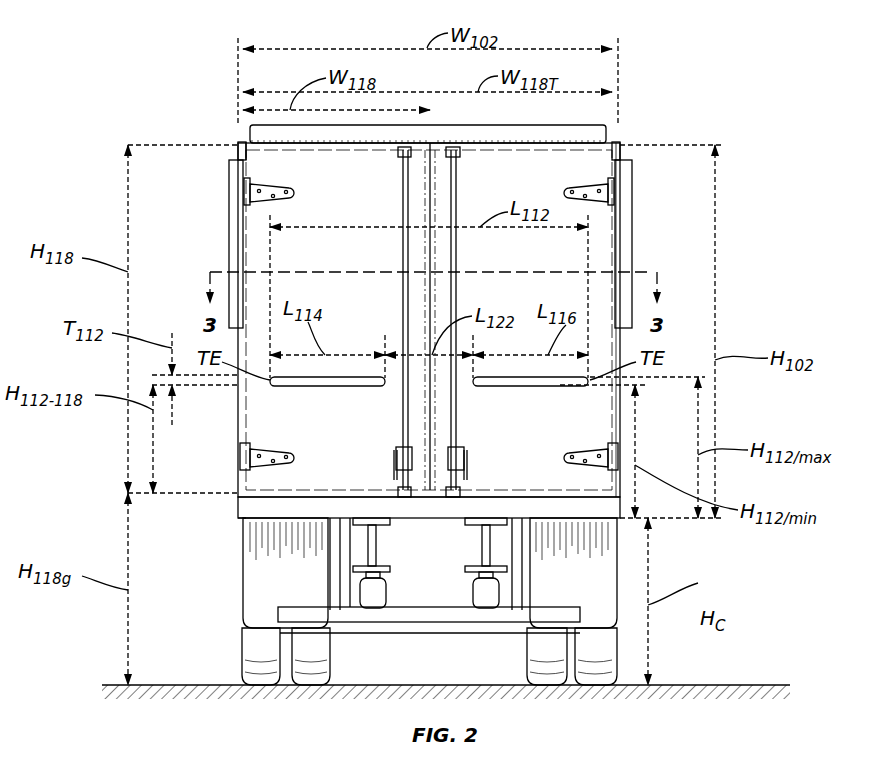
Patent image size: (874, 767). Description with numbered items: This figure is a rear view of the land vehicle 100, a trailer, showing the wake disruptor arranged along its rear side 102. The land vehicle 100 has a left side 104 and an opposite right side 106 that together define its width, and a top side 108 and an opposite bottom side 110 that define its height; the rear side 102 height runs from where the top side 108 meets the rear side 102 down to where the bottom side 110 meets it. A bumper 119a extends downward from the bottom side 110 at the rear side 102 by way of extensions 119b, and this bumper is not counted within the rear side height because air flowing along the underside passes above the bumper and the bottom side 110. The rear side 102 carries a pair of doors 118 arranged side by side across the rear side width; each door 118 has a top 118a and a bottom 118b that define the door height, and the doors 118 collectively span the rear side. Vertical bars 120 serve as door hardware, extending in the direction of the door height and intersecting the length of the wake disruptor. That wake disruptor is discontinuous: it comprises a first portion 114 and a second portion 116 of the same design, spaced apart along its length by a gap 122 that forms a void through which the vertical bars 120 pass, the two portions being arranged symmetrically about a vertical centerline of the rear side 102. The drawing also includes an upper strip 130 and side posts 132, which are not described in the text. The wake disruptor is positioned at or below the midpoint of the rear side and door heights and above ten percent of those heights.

The land vehicle 100 is at (674, 56).
The rear side 102 is at (598, 512).
The left side 104 is at (237, 152).
The right side 106 is at (620, 152).
The top side 108 is at (622, 140).
The bottom side 110 is at (418, 530).
The first portion 114 is at (310, 387).
The second portion 116 is at (552, 388).
The doors 118 is at (242, 455).
The top of door 118a is at (240, 140).
The bottom of door 118b is at (252, 505).
The bumper 119a is at (335, 565).
The extensions 119b is at (515, 565).
The vertical bars 120 is at (396, 445).
The gap 122 is at (437, 375).
The top seal strip 130 is at (514, 128).
The side posts 132 is at (229, 212).